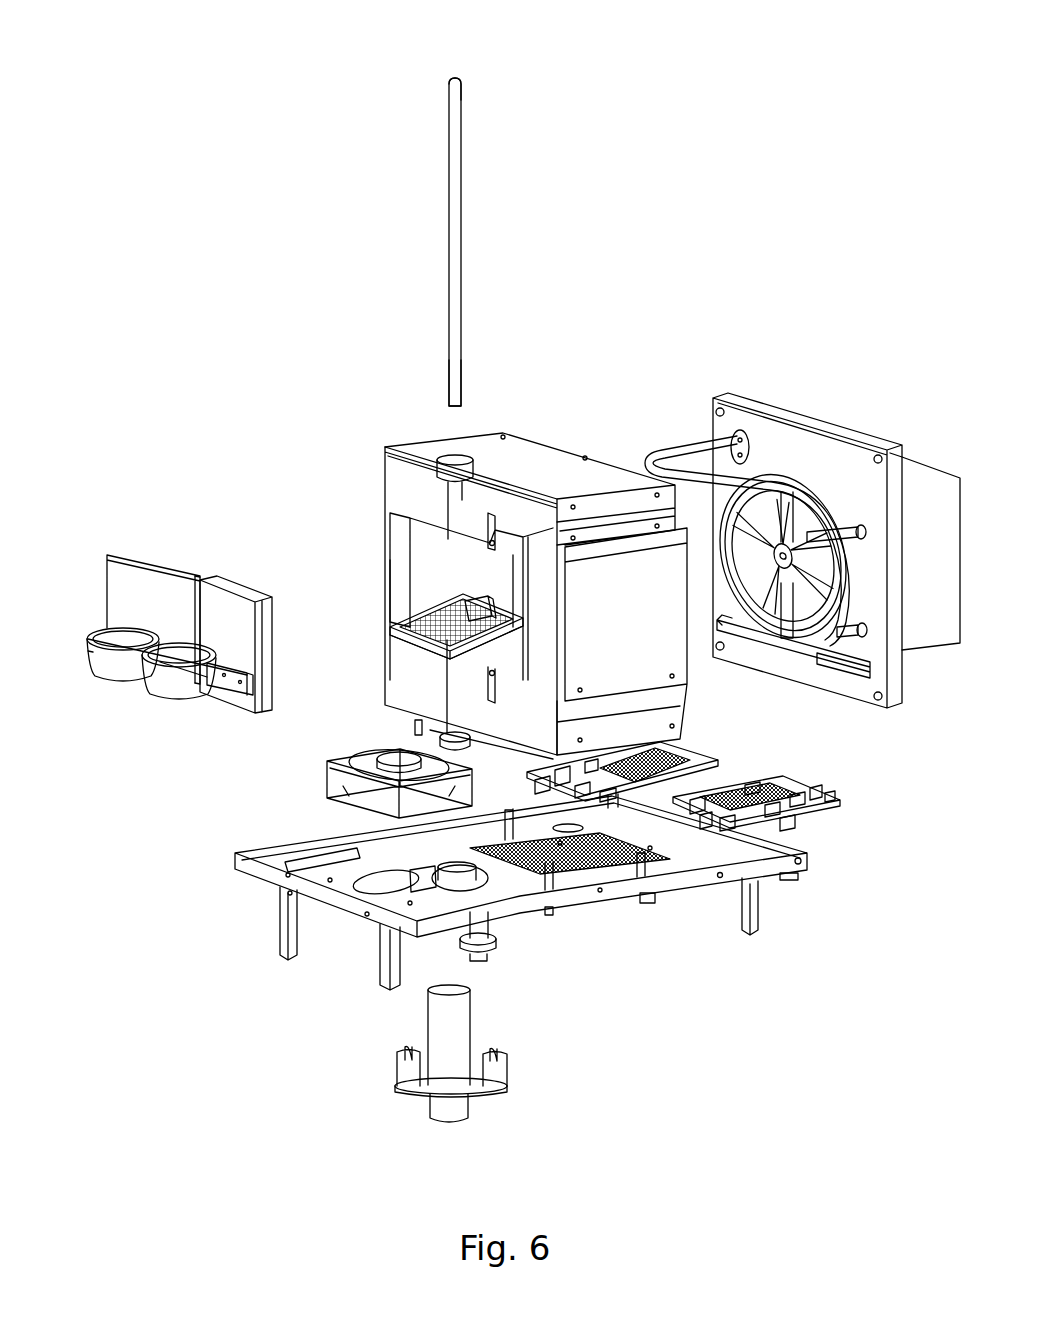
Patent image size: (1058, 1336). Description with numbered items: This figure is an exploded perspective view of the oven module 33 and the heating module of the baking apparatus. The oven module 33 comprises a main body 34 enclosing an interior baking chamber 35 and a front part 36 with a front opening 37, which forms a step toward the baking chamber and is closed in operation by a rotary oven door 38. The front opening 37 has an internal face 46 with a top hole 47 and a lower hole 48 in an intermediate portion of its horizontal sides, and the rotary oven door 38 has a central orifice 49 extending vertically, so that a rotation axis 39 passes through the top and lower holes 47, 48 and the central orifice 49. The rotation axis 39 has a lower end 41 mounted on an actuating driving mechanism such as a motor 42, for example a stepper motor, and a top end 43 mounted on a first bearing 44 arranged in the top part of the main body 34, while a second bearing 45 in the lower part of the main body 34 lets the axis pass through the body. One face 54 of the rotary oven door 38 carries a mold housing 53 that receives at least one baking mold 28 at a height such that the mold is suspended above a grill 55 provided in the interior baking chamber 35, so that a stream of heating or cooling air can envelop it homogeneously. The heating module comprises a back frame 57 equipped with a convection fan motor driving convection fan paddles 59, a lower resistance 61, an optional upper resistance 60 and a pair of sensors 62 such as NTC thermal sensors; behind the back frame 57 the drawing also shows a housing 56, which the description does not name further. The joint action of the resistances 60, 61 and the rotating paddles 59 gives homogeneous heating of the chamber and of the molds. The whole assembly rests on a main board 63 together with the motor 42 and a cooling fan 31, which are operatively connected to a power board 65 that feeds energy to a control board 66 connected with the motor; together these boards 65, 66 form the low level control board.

The baking mold 28 is at (172, 683).
The cooling fan 31 is at (398, 797).
The oven module 33 is at (484, 527).
The main body 34 is at (420, 450).
The interior baking chamber 35 is at (460, 596).
The front part 36 is at (400, 482).
The front opening 37 is at (418, 553).
The rotary oven door 38 is at (122, 603).
The rotation axis 39 is at (452, 178).
The lower end 41 is at (444, 393).
The motor 42 is at (452, 1035).
The top end 43 is at (466, 93).
The first bearing 44 is at (457, 460).
The second bearing 45 is at (460, 743).
The internal face 46 is at (402, 585).
The top hole 47 is at (453, 540).
The lower hole 48 is at (447, 648).
The central orifice 49 is at (205, 580).
The mold housing 53 is at (233, 688).
The face 54 is at (190, 612).
The grill 55 is at (480, 635).
The fan housing 56 is at (868, 412).
The back frame 57 is at (763, 408).
The convection fan paddles 59 is at (797, 610).
The upper resistance 60 is at (667, 464).
The lower resistance 61 is at (790, 653).
The sensors 62 is at (840, 630).
The main board 63 is at (270, 862).
The power board 65 is at (793, 782).
The control board 66 is at (680, 745).